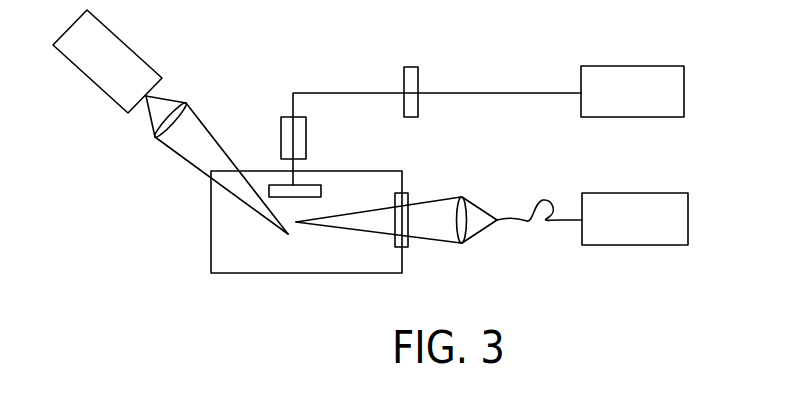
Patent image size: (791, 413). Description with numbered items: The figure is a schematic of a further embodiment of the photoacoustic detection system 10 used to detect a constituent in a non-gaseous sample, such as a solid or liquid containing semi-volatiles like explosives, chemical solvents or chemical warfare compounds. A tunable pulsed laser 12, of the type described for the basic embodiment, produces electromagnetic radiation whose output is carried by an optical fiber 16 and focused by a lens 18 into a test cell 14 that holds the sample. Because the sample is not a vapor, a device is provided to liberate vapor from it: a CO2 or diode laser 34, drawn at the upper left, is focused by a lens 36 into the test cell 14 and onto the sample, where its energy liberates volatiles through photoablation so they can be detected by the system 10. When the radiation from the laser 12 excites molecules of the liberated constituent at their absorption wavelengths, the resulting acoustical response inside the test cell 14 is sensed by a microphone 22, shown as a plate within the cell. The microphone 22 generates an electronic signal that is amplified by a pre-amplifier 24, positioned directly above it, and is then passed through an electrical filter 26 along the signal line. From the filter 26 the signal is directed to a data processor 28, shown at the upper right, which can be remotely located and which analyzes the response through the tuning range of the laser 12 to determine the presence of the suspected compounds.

The system 10 is at (287, 58).
The laser 12 is at (649, 231).
The test cell 14 is at (385, 171).
The optical fiber 16 is at (546, 204).
The lens 18 is at (462, 196).
The microphone 22 is at (316, 185).
The pre-amplifier 24 is at (306, 131).
The electrical filter 26 is at (417, 66).
The data processor 28 is at (623, 66).
The CO2 laser 34 is at (111, 64).
The lens 36 is at (186, 103).